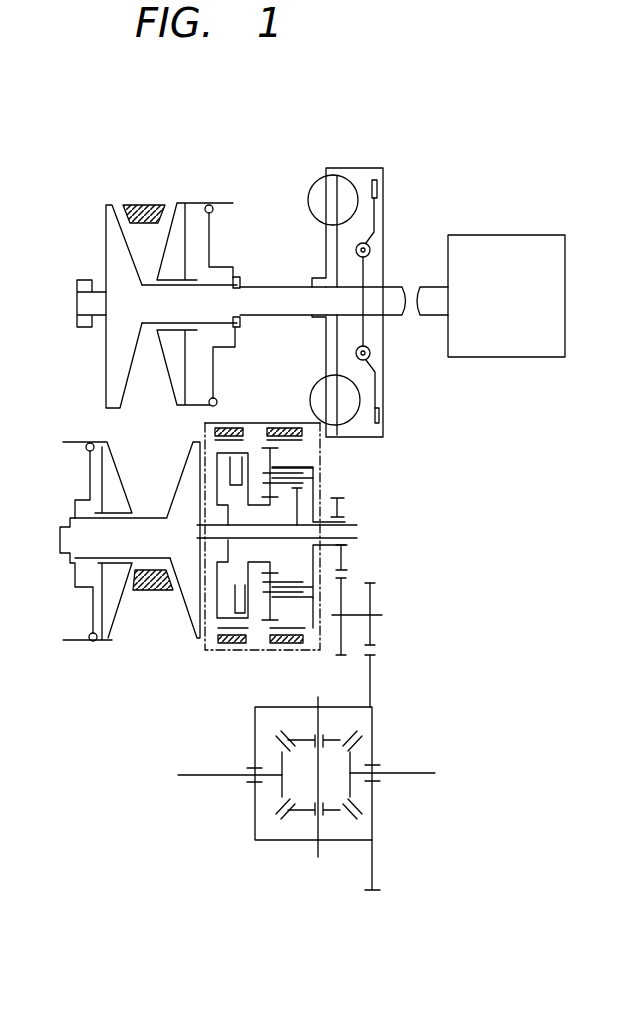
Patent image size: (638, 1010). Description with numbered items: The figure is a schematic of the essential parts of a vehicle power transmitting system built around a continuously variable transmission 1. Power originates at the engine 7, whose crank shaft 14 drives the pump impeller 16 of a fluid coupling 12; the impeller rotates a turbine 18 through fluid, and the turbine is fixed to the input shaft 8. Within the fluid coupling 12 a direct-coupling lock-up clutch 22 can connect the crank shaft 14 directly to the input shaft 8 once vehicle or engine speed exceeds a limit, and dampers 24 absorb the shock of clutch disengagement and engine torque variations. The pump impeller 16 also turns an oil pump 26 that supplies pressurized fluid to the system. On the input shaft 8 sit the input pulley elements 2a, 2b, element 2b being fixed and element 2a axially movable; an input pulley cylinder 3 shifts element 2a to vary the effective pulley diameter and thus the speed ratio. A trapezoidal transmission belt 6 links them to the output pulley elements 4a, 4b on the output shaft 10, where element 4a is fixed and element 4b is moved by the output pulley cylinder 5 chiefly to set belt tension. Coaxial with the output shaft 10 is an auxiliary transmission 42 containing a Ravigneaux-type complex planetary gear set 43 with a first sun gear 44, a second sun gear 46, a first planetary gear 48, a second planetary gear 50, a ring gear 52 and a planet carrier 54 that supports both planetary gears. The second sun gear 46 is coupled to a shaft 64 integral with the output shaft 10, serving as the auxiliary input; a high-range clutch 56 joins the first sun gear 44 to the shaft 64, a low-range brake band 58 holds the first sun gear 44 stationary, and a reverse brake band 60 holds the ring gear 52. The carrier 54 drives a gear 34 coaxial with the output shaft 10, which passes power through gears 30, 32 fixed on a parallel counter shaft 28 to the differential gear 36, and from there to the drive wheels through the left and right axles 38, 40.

The continuously variable transmission 1 is at (137, 648).
The input pulley element 2a is at (177, 267).
The input pulley element 2b is at (112, 212).
The input pulley cylinder 3 is at (203, 226).
The output pulley element 4a is at (188, 477).
The output pulley element 4b is at (113, 495).
The output pulley cylinder 5 is at (98, 610).
The transmission belt 6 is at (148, 212).
The engine 7 is at (513, 358).
The input shaft 8 is at (153, 307).
The output shaft 10 is at (98, 540).
The fluid coupling 12 is at (340, 164).
The crank shaft 14 is at (395, 290).
The pump impeller 16 is at (312, 190).
The turbine 18 is at (345, 190).
The direct-coupling lock-up clutch 22 is at (380, 184).
The dampers 24 is at (372, 353).
The oil pump 26 is at (82, 282).
The counter shaft 28 is at (380, 613).
The gear 30 is at (341, 657).
The gear 32 is at (375, 644).
The gear 34 is at (343, 565).
The differential gear 36 is at (294, 848).
The left axle 38 is at (190, 778).
The right axle 40 is at (417, 776).
The auxiliary transmission 42 is at (296, 418).
The complex planetary gear set 43 is at (305, 462).
The first sun gear 44 is at (222, 538).
The second sun gear 46 is at (302, 585).
The first planetary gear 48 is at (258, 628).
The second planetary gear 50 is at (317, 625).
The ring gear 52 is at (288, 643).
The planet carrier 54 is at (316, 488).
The high-range clutch 56 is at (235, 457).
The low-range brake band 58 is at (225, 428).
The reverse brake band 60 is at (273, 428).
The shaft 64 is at (212, 543).